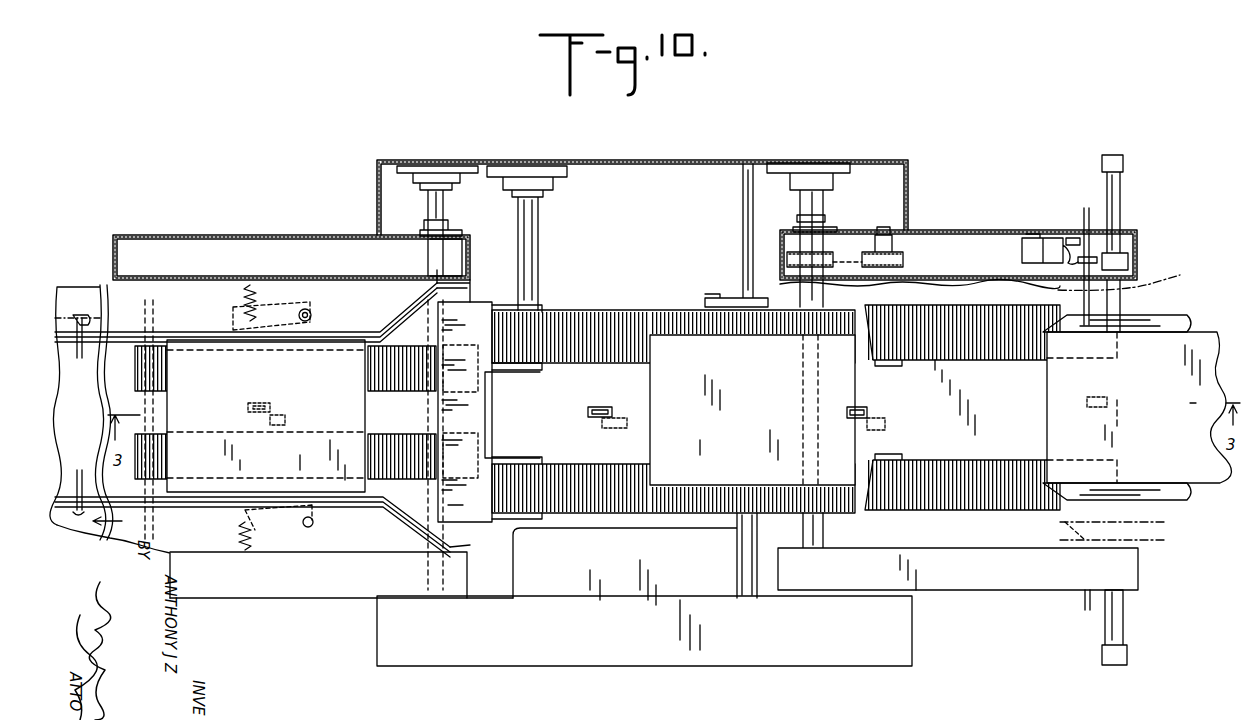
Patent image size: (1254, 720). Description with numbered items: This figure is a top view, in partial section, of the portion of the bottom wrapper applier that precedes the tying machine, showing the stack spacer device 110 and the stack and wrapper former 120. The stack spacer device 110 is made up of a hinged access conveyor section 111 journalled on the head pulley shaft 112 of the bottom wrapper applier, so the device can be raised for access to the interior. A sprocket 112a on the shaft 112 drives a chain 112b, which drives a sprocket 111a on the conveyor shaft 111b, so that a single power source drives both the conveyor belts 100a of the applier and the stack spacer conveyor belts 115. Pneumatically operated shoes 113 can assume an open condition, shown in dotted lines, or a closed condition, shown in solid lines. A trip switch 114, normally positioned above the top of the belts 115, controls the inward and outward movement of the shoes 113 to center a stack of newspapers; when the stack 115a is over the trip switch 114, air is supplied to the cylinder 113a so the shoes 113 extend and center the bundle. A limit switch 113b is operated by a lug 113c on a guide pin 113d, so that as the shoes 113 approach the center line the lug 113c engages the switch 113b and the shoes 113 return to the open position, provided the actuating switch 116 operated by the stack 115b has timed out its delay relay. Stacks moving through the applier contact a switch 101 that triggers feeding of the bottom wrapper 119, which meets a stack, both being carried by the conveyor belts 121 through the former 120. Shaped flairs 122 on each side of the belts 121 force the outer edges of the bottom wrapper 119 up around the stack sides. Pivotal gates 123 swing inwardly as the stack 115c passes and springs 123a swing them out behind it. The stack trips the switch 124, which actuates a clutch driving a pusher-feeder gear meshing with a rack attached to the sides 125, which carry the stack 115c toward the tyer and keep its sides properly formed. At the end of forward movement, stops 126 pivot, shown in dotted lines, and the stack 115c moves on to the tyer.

The conveyor belts 100a is at (633, 323).
The switch 101 is at (598, 408).
The stack spacer device 110 is at (1173, 249).
The hinged access conveyor section 111 is at (988, 578).
The sprocket 111a is at (905, 264).
The conveyor shaft 111b is at (905, 254).
The head pulley shaft 112 is at (818, 200).
The sprocket 112a is at (812, 262).
The chain 112b is at (850, 285).
The pneumatically operated shoes 113 is at (1165, 318).
The cylinder 113a is at (1122, 186).
The limit switch 113b is at (1060, 242).
The lug 113c is at (1097, 258).
The guide pin 113d is at (1086, 210).
The trip switch 114 is at (1105, 397).
The conveyor belts 115 is at (980, 350).
The stack 115a is at (1185, 442).
The stack 115b is at (770, 392).
The stack 115c is at (272, 385).
The actuating switch 116 is at (870, 410).
The bottom wrapper 119 is at (493, 302).
The stack and wrapper former 120 is at (378, 496).
The conveyor belts 121 is at (402, 445).
The shaped flairs 122 is at (448, 292).
The pivotal gates 123 is at (270, 315).
The springs 123a is at (245, 300).
The switch 124 is at (270, 405).
The sides 125 is at (86, 274).
The stops 126 is at (80, 360).